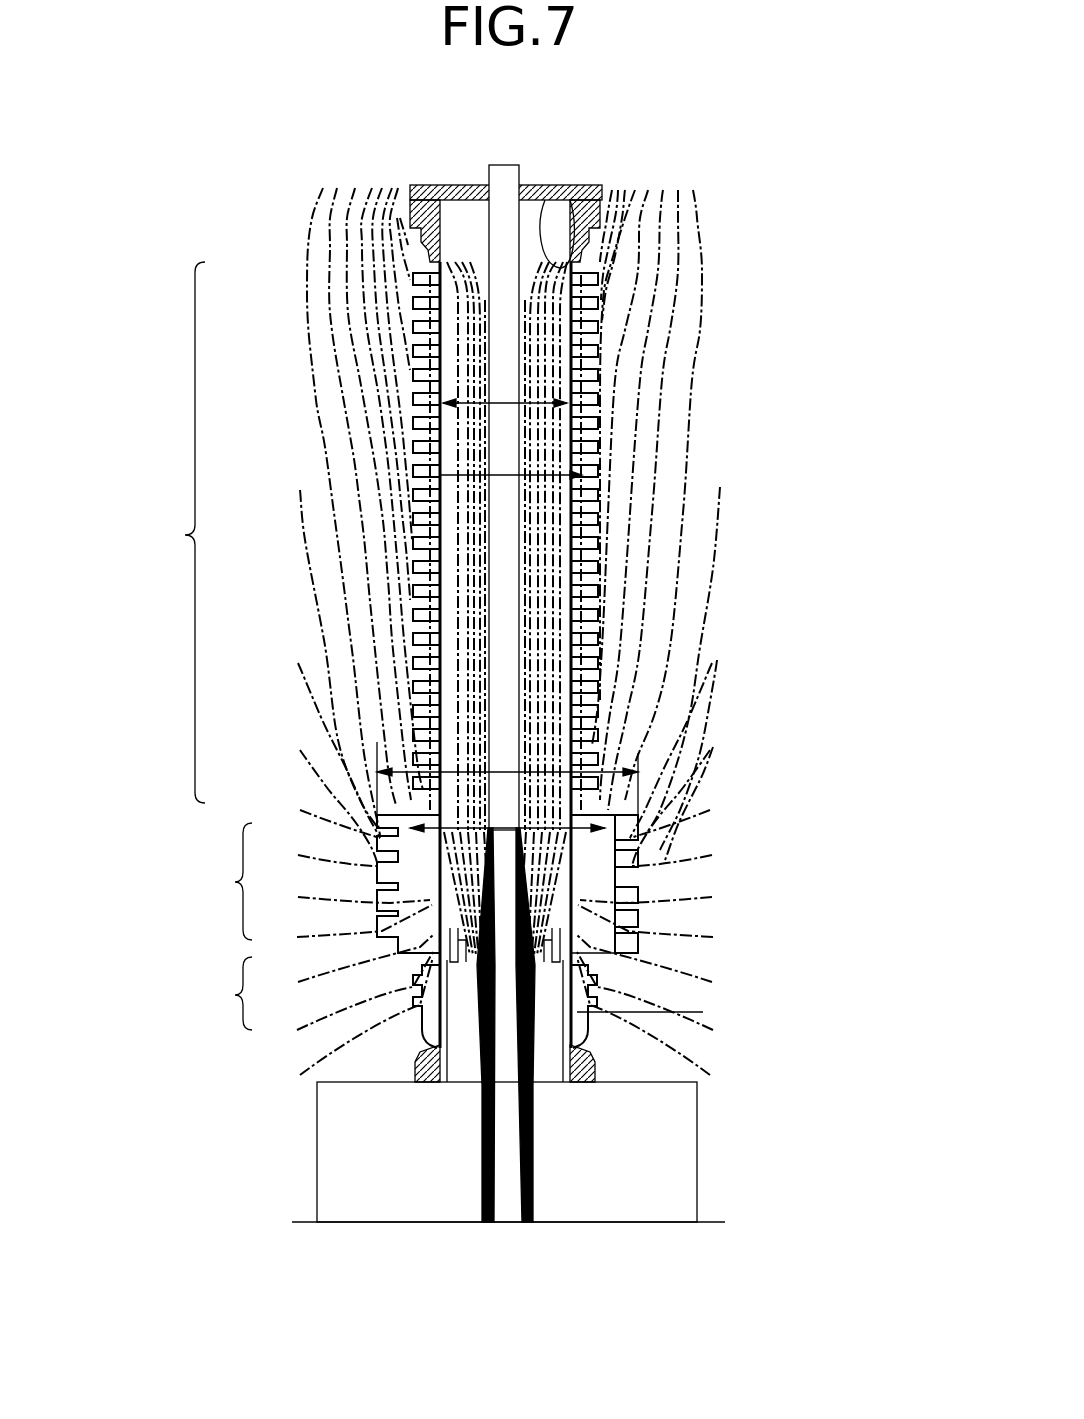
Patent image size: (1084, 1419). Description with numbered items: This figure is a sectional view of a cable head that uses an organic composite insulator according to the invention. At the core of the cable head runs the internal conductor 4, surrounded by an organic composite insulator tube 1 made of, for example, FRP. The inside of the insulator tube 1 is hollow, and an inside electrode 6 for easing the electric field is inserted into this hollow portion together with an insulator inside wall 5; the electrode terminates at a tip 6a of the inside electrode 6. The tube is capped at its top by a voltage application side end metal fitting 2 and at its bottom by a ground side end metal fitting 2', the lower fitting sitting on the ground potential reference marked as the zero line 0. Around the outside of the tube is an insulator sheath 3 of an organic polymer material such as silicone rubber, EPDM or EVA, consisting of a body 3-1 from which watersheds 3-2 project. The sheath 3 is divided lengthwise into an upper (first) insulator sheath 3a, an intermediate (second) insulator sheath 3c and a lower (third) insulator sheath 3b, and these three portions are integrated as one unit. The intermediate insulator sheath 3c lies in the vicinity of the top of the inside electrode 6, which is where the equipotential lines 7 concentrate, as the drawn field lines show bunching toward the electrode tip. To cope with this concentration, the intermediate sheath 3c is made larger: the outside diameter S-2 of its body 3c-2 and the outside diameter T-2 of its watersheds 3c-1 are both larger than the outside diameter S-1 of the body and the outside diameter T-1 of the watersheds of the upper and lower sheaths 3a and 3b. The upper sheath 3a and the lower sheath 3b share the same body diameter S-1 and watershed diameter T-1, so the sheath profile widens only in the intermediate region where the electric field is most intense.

The organic composite insulator tube 1 is at (545, 193).
The voltage application side end metal fitting 2 is at (593, 223).
The ground side end metal fitting 2' is at (603, 1081).
The insulator sheath 3 is at (587, 278).
The body 3-1 is at (420, 340).
The watersheds 3-2 is at (420, 372).
The upper (first) insulator sheath 3a is at (172, 532).
The lower (third) insulator sheath 3b is at (310, 1002).
The intermediate (second) insulator sheath 3c is at (643, 833).
The watersheds of the intermediate insulator sheath 3c-1 is at (625, 920).
The body of the intermediate insulator sheath 3c-2 is at (643, 882).
The internal conductor 4 is at (507, 1202).
The insulator inside wall 5 is at (703, 1012).
The inside electrode for easing the electric field 6 is at (583, 960).
The tip of the inside electrode 6a is at (627, 930).
The equipotential lines 7 is at (712, 532).
The outside diameter of the body of the upper and lower insulator sheaths S-1 is at (558, 400).
The outside diameter of the body of the intermediate insulator sheath S-2 is at (643, 777).
The outside diameter of the watersheds of the upper and lower insulator sheaths T-1 is at (548, 475).
The outside diameter of the watersheds of the intermediate insulator sheath T-2 is at (570, 737).
The zero potential line 0 is at (571, 1222).